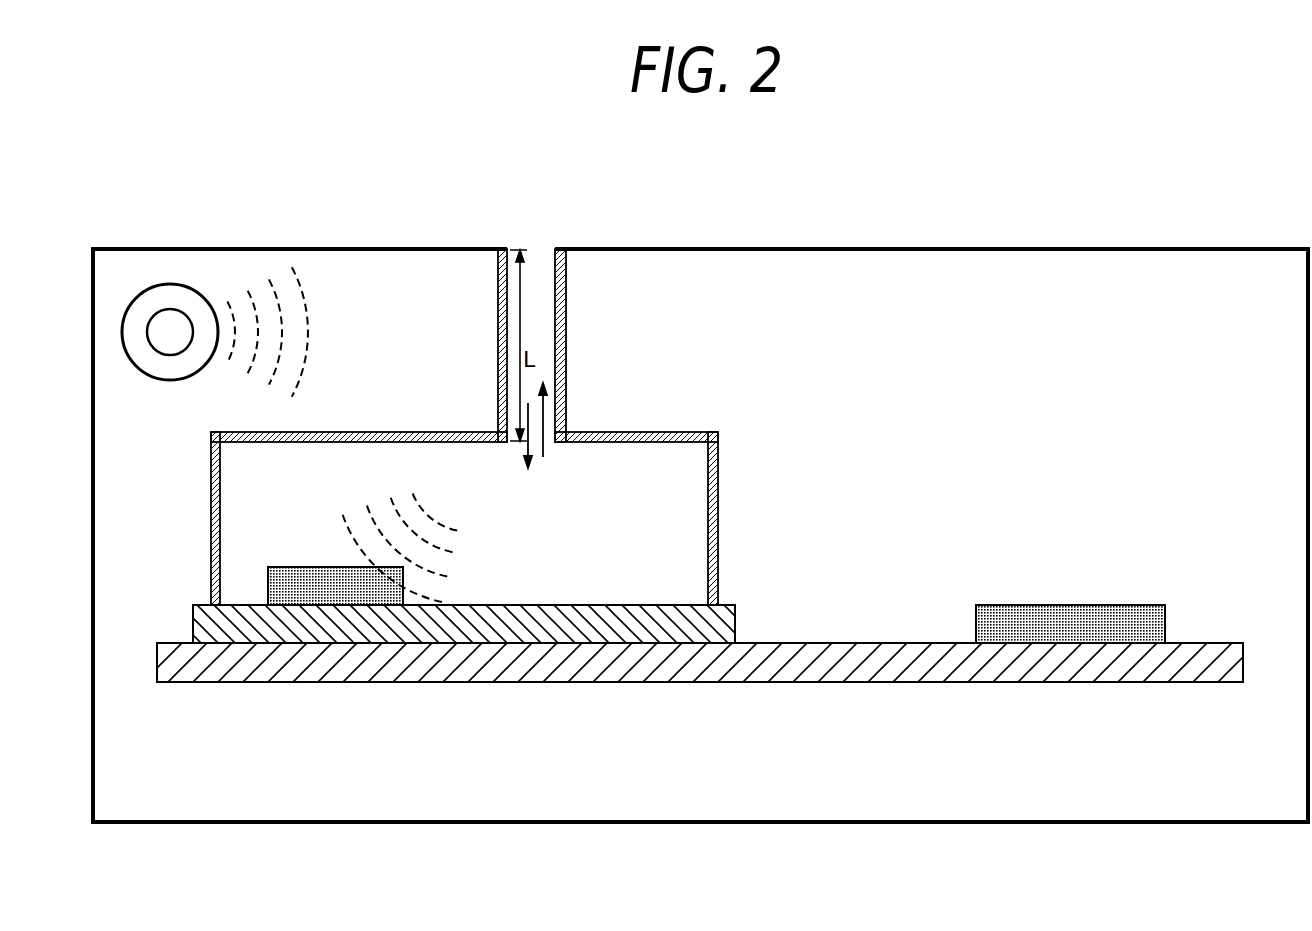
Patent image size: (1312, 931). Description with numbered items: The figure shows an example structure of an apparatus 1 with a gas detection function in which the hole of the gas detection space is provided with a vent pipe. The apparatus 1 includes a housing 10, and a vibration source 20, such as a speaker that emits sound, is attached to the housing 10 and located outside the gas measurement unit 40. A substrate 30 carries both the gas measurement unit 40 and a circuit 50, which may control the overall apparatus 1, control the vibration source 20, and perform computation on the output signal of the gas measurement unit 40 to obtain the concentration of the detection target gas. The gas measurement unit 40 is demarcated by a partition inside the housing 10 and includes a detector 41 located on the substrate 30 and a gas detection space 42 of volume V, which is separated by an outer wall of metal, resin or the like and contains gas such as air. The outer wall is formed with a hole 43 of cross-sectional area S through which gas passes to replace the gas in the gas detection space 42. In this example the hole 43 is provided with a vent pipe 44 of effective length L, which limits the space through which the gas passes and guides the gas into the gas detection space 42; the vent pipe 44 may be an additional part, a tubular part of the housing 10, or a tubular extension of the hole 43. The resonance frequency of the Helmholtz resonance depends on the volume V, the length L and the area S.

The apparatus with a gas detection function 1 is at (690, 197).
The housing 10 is at (1000, 249).
The vibration source 20 is at (156, 363).
The substrate 30 is at (840, 663).
The gas measurement unit 40 is at (718, 487).
The detector 41 is at (307, 575).
The gas detection space 42 is at (613, 517).
The hole 43 is at (547, 437).
The vent pipe 44 is at (566, 317).
The circuit 50 is at (1068, 615).